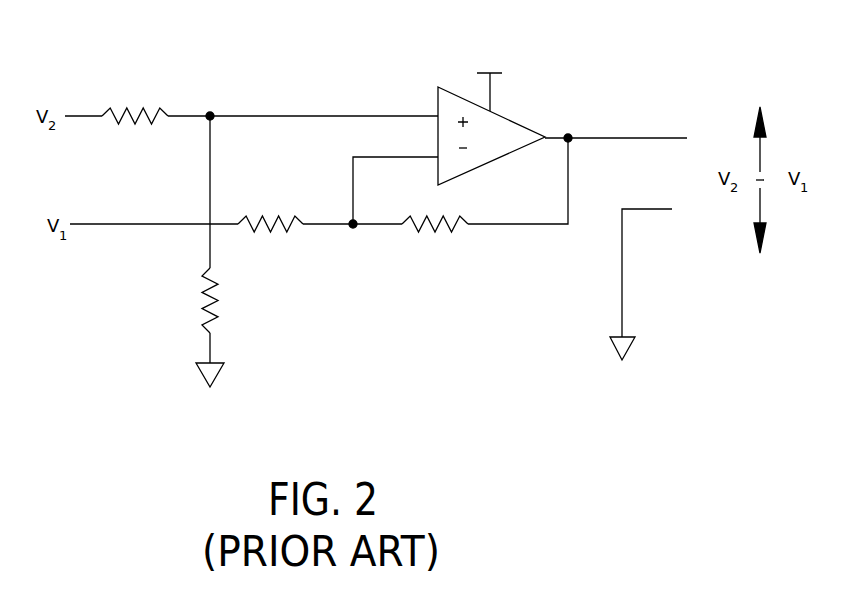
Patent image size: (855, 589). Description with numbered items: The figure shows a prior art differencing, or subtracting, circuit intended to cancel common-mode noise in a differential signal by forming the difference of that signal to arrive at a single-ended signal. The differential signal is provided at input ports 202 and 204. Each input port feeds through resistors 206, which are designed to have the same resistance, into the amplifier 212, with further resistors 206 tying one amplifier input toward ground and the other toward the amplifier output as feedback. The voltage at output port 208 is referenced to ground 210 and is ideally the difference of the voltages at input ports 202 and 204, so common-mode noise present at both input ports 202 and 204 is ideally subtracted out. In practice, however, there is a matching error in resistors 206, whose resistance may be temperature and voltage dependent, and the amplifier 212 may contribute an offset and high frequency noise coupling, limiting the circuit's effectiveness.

The input port 202 is at (82, 112).
The input port 204 is at (118, 228).
The resistors 206 is at (158, 104).
The output port 208 is at (666, 138).
The ground 210 is at (668, 212).
The amplifier 212 is at (510, 116).